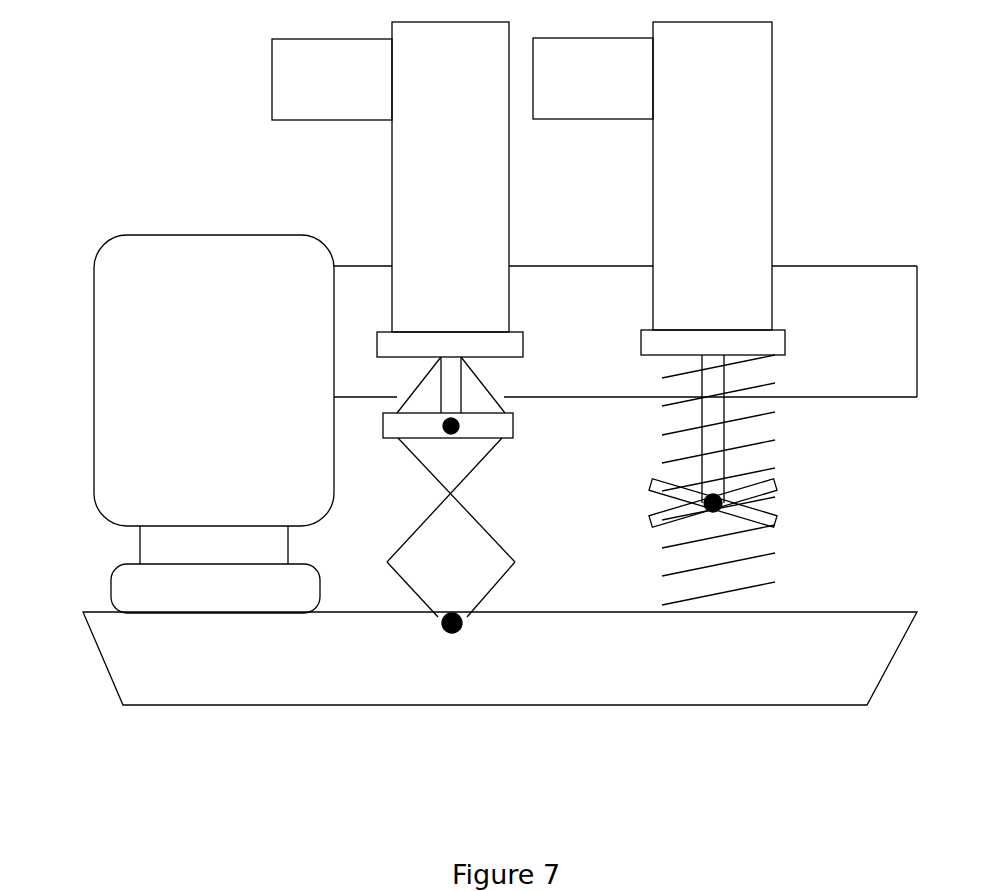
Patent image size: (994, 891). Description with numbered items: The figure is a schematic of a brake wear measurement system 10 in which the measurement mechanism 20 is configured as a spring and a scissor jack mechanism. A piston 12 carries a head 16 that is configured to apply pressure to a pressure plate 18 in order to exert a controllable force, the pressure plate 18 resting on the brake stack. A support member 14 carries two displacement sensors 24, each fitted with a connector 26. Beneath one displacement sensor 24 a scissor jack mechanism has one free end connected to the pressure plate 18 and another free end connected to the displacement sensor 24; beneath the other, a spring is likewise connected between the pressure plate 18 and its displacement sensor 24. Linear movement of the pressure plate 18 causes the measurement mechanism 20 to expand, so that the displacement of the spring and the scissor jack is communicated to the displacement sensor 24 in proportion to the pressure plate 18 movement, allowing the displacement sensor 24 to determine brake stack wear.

The brake wear measurement system 10 is at (178, 70).
The piston 12 is at (154, 285).
The support member 14 is at (832, 300).
The head 16 is at (157, 585).
The pressure plate 18 is at (215, 706).
The measurement mechanism 20 is at (481, 524).
The displacement sensor 24 is at (471, 234).
The connector 26 is at (296, 105).